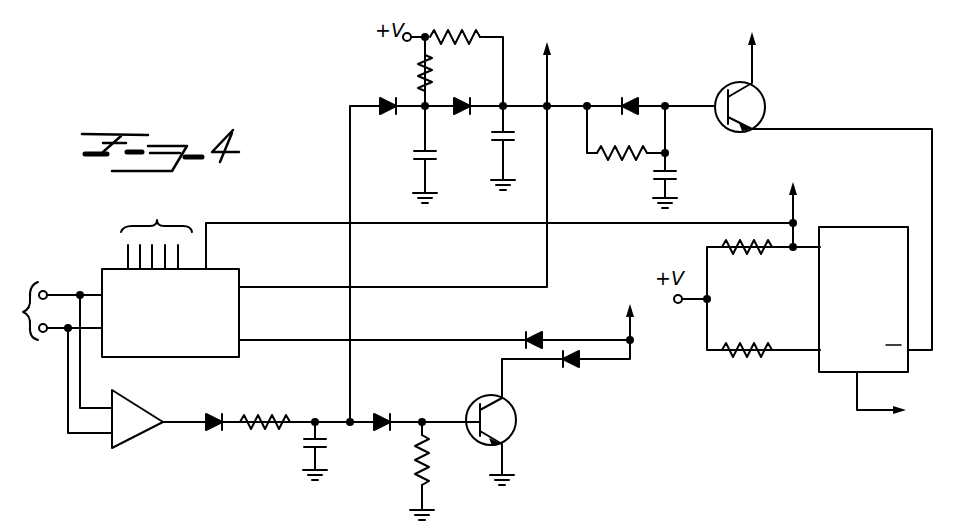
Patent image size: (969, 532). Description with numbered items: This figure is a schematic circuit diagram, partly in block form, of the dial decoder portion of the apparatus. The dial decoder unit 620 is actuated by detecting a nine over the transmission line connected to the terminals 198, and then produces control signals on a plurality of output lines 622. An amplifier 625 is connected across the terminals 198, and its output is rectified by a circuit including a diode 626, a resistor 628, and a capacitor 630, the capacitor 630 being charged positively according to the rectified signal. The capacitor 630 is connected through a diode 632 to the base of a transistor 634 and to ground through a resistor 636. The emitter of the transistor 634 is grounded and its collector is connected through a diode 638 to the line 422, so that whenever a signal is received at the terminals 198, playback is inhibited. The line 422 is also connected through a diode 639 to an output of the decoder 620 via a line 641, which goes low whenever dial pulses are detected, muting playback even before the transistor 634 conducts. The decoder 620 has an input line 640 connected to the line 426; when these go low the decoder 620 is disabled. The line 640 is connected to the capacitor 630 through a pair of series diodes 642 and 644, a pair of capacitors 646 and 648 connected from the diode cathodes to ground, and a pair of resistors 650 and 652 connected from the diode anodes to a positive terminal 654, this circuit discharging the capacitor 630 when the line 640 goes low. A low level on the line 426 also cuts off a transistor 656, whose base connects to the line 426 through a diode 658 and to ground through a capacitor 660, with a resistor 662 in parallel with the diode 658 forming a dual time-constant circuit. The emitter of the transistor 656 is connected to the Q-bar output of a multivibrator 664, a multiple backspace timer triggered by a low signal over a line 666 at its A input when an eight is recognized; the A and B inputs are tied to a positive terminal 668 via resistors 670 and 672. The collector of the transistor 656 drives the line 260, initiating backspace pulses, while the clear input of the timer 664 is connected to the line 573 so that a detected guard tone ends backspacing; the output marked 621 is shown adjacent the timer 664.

The terminals 198 is at (16, 312).
The dial decoder unit 620 is at (215, 280).
The output lines 622 is at (158, 218).
The amplifier 625 is at (132, 437).
The diode 626 is at (211, 410).
The resistor 628 is at (268, 430).
The capacitor 630 is at (322, 445).
The diode 632 is at (380, 410).
The transistor 634 is at (512, 432).
The resistor 636 is at (430, 475).
The diode 638 is at (575, 368).
The diode 639 is at (536, 331).
The input line 640 is at (430, 287).
The line 641 is at (428, 340).
The diode 642 is at (462, 114).
The diode 644 is at (388, 114).
The capacitor 646 is at (498, 138).
The capacitor 648 is at (421, 158).
The resistor 650 is at (465, 37).
The resistor 652 is at (432, 74).
The terminal 654 is at (404, 42).
The transistor 656 is at (730, 130).
The diode 658 is at (630, 97).
The capacitor 660 is at (673, 178).
The resistor 662 is at (626, 160).
The multivibrator 664 is at (838, 375).
The line 666 is at (625, 227).
The terminal 668 is at (682, 305).
The resistor 670 is at (740, 253).
The resistor 672 is at (747, 360).
The line 260 is at (758, 66).
The line 422 is at (638, 345).
The line 426 is at (552, 72).
The output line 621 is at (803, 212).
The line 573 is at (872, 413).